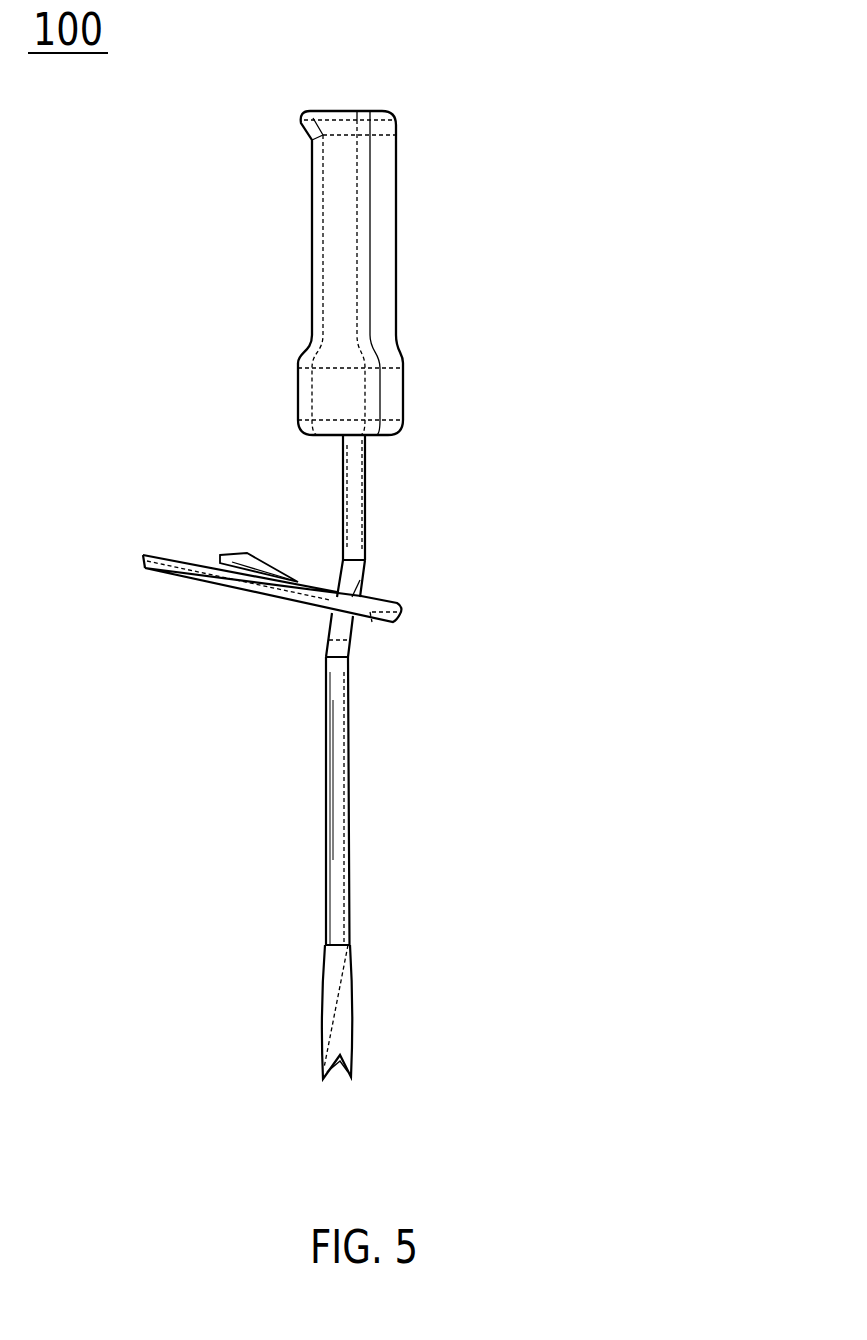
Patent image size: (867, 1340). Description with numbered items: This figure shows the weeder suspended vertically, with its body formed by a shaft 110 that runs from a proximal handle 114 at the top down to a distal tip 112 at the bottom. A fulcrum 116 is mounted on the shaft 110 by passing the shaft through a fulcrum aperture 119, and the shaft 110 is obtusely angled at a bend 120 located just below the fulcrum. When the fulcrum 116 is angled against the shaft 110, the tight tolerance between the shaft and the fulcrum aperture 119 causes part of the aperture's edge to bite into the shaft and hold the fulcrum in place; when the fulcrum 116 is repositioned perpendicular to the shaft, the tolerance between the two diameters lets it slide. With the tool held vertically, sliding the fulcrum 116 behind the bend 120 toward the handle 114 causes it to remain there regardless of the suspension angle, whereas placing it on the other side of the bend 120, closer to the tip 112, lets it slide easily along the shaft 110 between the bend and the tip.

The shaft 110 is at (338, 863).
The tip end 112 is at (337, 1090).
The handle end 114 is at (382, 255).
The fulcrum 116 is at (285, 597).
The fulcrum aperture 119 is at (363, 585).
The bend 120 is at (342, 630).